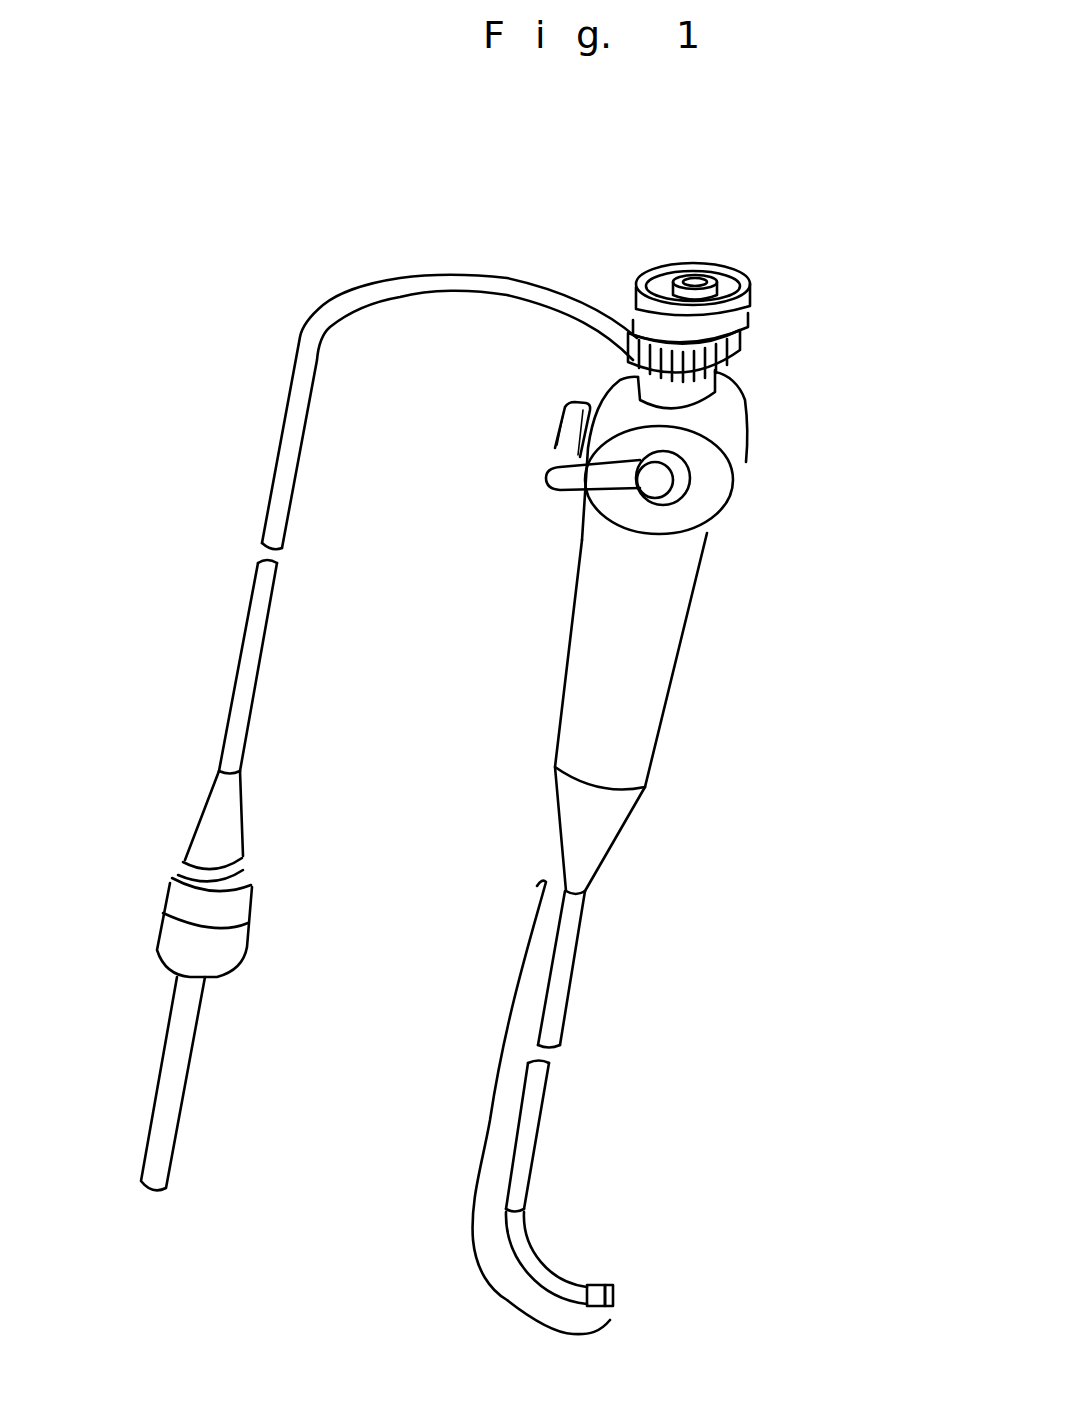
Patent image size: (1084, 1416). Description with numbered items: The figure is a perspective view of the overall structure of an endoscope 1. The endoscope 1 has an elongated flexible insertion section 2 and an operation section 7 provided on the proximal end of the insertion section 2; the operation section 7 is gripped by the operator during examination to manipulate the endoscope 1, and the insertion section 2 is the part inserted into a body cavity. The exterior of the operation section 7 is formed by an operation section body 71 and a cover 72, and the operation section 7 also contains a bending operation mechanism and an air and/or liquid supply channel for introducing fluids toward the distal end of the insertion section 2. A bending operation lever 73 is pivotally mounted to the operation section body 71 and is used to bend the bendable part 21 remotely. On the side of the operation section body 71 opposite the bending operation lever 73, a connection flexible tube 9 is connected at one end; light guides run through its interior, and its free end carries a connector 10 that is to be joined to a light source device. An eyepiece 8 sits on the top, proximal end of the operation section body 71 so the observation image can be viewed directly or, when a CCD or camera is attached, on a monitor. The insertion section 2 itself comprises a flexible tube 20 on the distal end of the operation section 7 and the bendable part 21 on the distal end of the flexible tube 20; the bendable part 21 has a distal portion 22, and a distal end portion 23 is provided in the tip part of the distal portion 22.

The endoscope 1 is at (781, 243).
The insertion section 2 is at (499, 1070).
The operation section 7 is at (715, 593).
The eyepiece 8 is at (743, 312).
The connection flexible tube 9 is at (283, 492).
The connector 10 is at (230, 955).
The flexible tube 20 is at (533, 1120).
The bendable part 21 is at (523, 1247).
The distal portion 22 is at (597, 1297).
The distal end portion 23 is at (614, 1298).
The operation section body 71 is at (712, 493).
The cover 72 is at (650, 698).
The bending operation lever 73 is at (570, 438).